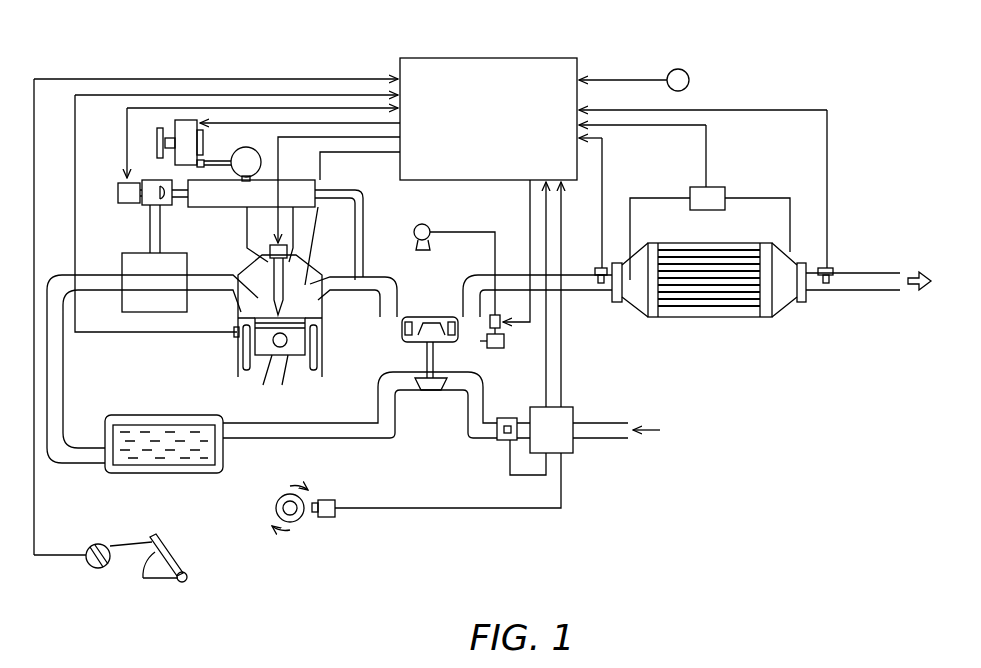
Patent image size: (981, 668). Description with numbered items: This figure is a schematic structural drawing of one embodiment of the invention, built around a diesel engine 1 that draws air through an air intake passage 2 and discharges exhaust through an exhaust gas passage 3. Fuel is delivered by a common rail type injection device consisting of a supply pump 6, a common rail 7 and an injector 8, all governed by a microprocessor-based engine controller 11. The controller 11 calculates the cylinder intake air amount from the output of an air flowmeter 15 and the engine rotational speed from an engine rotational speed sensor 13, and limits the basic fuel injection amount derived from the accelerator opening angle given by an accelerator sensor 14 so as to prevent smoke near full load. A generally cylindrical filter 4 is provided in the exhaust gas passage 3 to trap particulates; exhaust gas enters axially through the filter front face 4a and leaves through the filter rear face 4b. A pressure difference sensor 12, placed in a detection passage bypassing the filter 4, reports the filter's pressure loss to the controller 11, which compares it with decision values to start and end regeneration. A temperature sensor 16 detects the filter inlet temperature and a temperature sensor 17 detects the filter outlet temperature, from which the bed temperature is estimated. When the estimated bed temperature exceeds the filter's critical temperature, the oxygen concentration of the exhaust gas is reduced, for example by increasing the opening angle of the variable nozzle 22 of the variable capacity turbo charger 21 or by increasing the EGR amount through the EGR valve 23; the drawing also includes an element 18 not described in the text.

The diesel engine 1 is at (332, 309).
The air intake passage 2 is at (217, 283).
The exhaust gas passage 3 is at (468, 297).
The filter 4 is at (697, 318).
The filter front face 4a is at (652, 312).
The filter rear face 4b is at (768, 312).
The supply pump 6 is at (185, 118).
The common rail 7 is at (250, 150).
The injector 8 is at (288, 243).
The engine controller 11 is at (527, 68).
The pressure difference sensor 12 is at (718, 197).
The engine rotational speed sensor 13 is at (330, 518).
The accelerator sensor 14 is at (92, 568).
The air flowmeter 15 is at (510, 418).
The temperature sensor 16 is at (598, 267).
The temperature sensor 17 is at (830, 266).
The ignition switch / sensor 18 is at (689, 77).
The variable capacity turbo charger 21 is at (428, 400).
The variable nozzle 22 is at (405, 343).
The EGR valve 23 is at (165, 202).